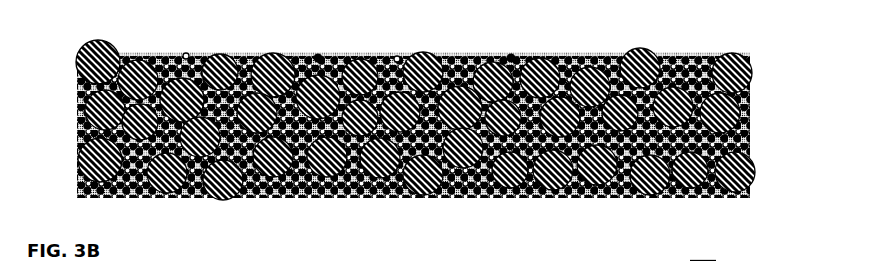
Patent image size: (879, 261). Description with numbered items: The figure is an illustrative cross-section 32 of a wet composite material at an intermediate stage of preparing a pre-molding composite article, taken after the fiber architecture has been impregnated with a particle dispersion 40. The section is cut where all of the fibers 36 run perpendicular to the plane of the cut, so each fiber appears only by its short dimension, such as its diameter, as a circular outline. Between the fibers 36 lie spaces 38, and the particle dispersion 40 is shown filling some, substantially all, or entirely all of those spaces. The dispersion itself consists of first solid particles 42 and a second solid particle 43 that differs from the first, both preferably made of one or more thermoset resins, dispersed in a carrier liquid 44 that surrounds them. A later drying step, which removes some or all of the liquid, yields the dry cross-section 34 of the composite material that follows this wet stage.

The cross-section 32 is at (615, 40).
The cross-section 34 is at (703, 258).
The fibers 36 is at (425, 56).
The spaces 38 is at (222, 82).
The particle dispersion 40 is at (318, 54).
The first solid particles 42 is at (510, 54).
The second solid particle 43 is at (185, 52).
The carrier liquid 44 is at (396, 55).